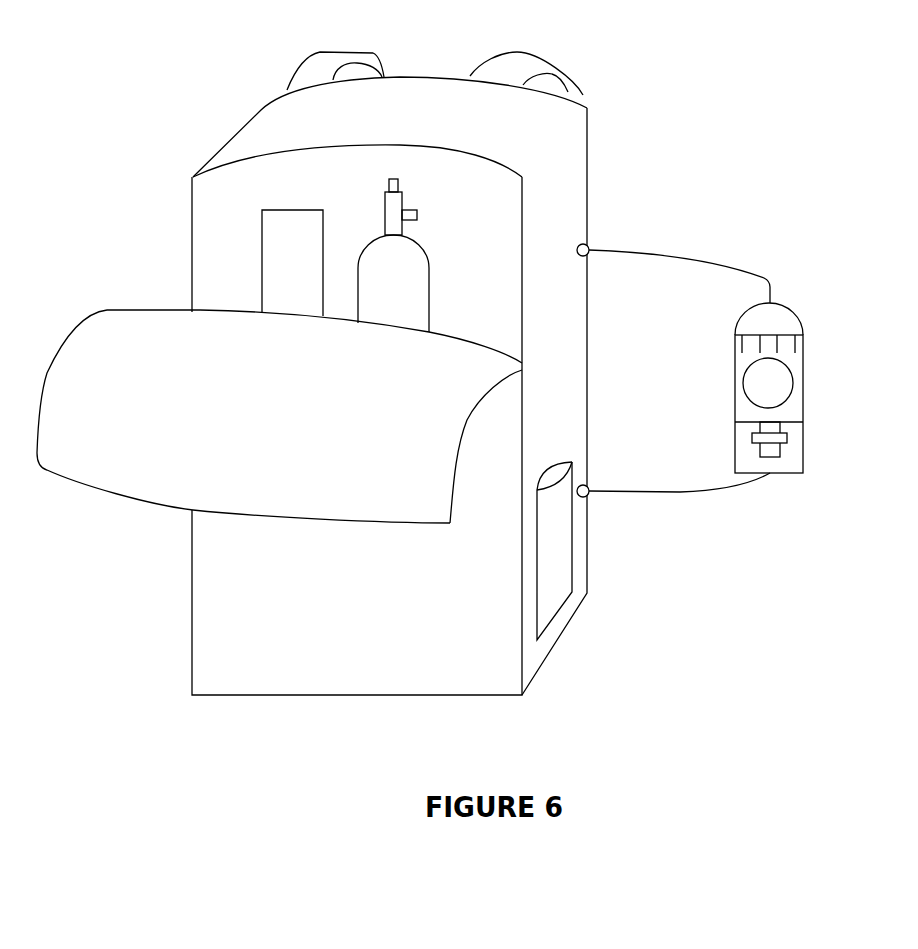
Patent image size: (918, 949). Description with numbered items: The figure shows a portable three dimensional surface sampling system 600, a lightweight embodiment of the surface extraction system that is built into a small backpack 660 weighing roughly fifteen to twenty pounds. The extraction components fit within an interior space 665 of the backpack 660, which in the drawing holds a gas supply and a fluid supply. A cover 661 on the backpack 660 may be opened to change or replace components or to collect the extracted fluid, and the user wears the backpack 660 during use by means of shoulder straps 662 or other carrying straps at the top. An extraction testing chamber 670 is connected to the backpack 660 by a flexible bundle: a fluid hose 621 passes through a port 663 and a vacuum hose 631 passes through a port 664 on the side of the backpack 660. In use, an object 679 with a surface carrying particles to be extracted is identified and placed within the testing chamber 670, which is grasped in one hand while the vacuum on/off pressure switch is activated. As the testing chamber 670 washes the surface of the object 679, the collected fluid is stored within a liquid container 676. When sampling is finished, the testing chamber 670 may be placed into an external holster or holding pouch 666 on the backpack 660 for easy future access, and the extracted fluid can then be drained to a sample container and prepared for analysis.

The portable three dimensional surface sampling system 600 is at (110, 145).
The backpack 660 is at (589, 177).
The cover 661 is at (102, 492).
The shoulder straps 662 is at (475, 70).
The port 663 is at (589, 245).
The port 664 is at (589, 487).
The interior space 665 is at (308, 192).
The holding pouch 666 is at (537, 588).
The fluid hose 621 is at (693, 255).
The vacuum hose 631 is at (703, 490).
The extraction testing chamber 670 is at (735, 370).
The object 679 is at (745, 393).
The liquid container 676 is at (735, 452).